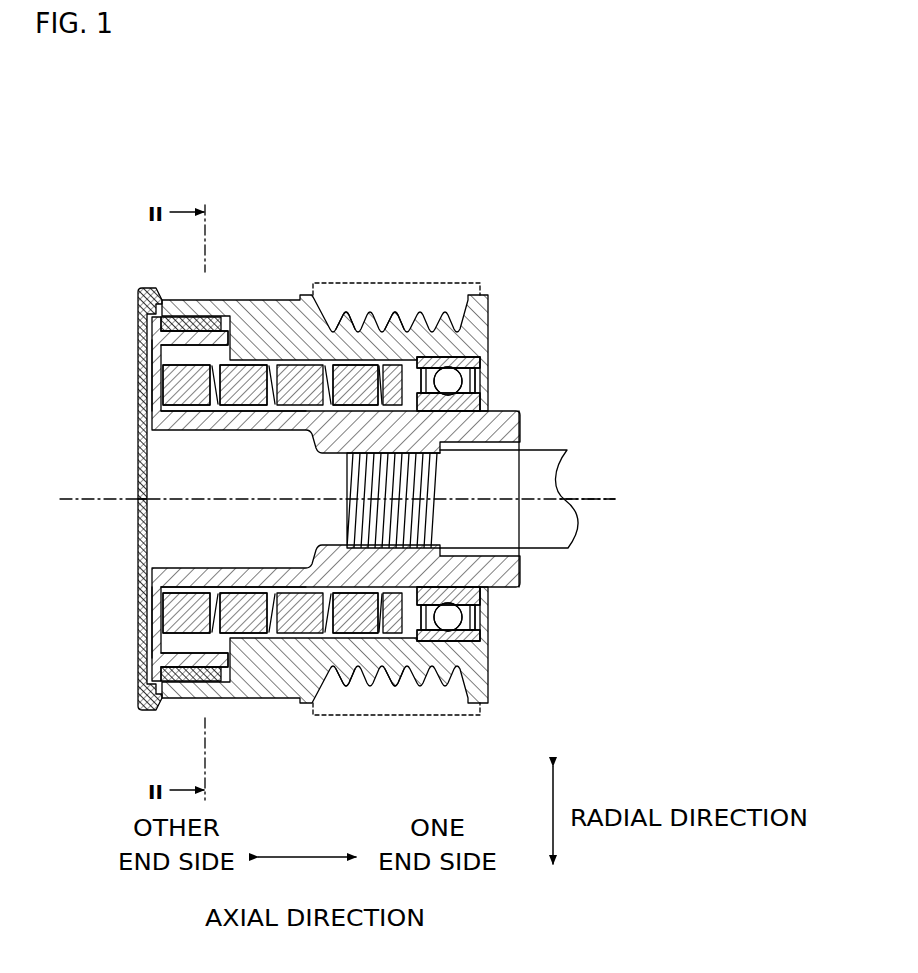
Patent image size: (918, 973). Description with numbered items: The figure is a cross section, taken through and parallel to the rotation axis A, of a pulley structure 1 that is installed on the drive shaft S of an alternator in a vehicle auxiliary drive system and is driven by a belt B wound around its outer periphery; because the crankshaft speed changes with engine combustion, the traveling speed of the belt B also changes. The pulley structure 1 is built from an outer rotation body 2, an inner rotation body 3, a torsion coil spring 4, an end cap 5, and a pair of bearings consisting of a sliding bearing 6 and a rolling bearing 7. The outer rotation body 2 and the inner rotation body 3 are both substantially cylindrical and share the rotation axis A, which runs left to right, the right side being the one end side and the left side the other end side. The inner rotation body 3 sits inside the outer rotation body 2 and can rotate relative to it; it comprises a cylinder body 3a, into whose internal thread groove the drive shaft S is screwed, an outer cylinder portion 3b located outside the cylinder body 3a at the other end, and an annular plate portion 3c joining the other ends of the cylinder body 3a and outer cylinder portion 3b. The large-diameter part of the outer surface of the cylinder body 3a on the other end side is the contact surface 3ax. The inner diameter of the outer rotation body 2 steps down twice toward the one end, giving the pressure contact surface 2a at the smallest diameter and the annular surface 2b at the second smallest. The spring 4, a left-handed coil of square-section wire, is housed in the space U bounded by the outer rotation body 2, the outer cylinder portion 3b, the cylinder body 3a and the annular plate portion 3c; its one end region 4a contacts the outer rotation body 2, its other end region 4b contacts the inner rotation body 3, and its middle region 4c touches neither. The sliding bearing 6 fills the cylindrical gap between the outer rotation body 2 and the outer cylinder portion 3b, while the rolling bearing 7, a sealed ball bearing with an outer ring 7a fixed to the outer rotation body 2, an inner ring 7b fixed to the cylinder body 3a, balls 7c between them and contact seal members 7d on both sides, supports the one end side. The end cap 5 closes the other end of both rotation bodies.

The pulley structure 1 is at (541, 166).
The outer rotation body 2 is at (490, 314).
The pressure contact surface 2a is at (382, 366).
The annular surface 2b is at (350, 331).
The inner rotation body 3 is at (512, 430).
The cylinder body 3a is at (338, 455).
The outer cylinder portion 3b is at (208, 320).
The annular plate portion 3c is at (153, 388).
The contact surface 3ax is at (185, 412).
The torsion coil spring 4 is at (310, 462).
The one end region 4a is at (333, 406).
The other end region 4b is at (199, 405).
The middle region 4c is at (247, 406).
The end cap 5 is at (137, 507).
The sliding bearing 6 is at (191, 316).
The rolling bearing 7 is at (501, 348).
The outer ring 7a is at (483, 359).
The inner ring 7b is at (487, 403).
The balls 7c is at (483, 388).
The annular contact seal members 7d is at (461, 372).
The rotation axis A is at (613, 495).
The belt B is at (395, 282).
The drive shaft S is at (548, 538).
The space U is at (203, 357).